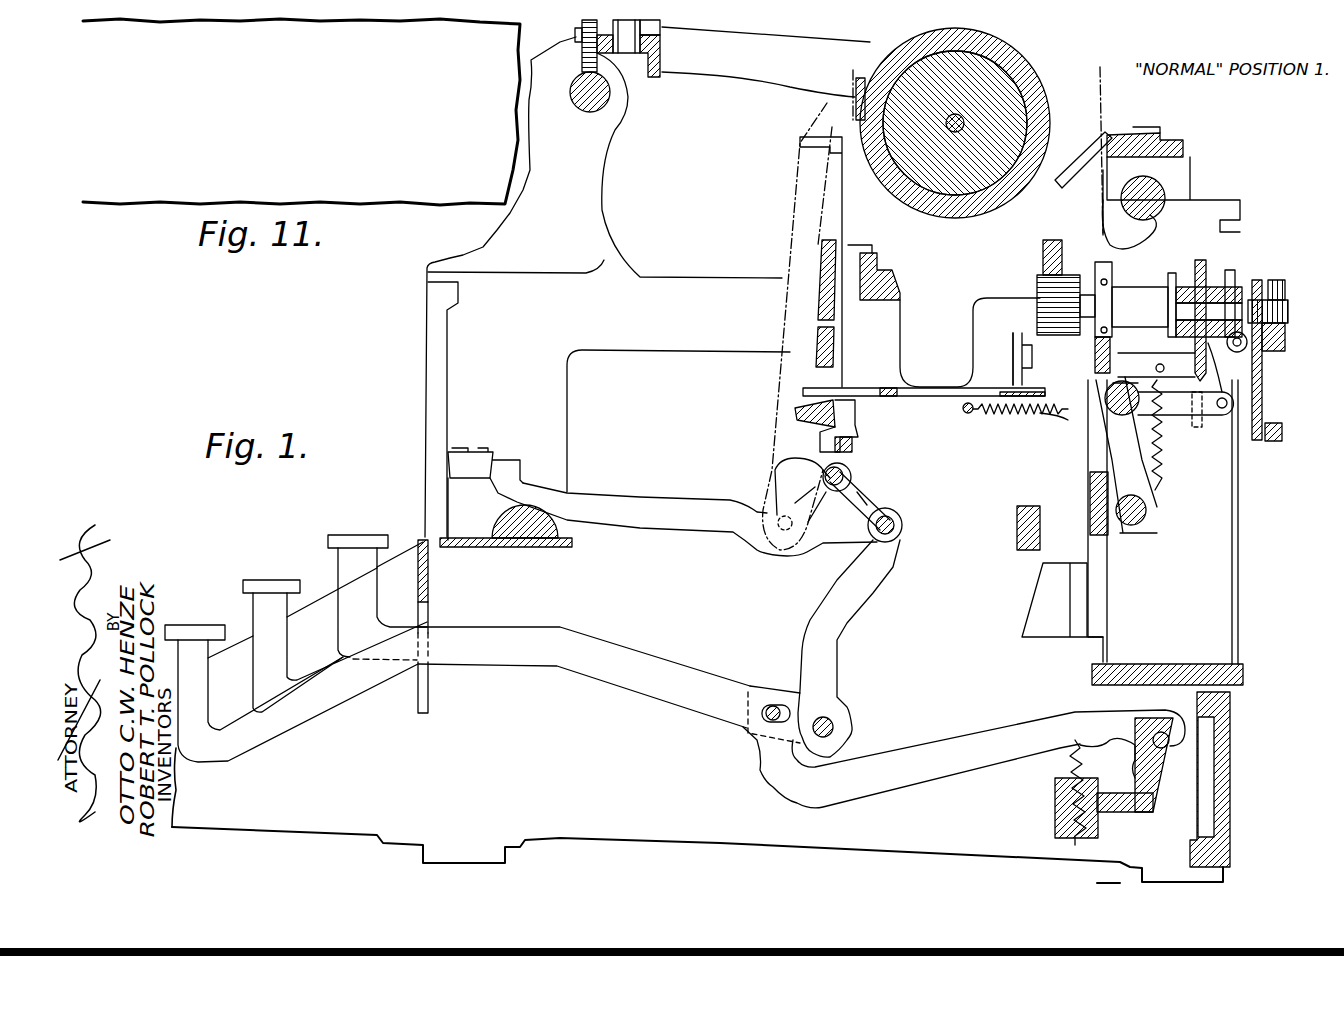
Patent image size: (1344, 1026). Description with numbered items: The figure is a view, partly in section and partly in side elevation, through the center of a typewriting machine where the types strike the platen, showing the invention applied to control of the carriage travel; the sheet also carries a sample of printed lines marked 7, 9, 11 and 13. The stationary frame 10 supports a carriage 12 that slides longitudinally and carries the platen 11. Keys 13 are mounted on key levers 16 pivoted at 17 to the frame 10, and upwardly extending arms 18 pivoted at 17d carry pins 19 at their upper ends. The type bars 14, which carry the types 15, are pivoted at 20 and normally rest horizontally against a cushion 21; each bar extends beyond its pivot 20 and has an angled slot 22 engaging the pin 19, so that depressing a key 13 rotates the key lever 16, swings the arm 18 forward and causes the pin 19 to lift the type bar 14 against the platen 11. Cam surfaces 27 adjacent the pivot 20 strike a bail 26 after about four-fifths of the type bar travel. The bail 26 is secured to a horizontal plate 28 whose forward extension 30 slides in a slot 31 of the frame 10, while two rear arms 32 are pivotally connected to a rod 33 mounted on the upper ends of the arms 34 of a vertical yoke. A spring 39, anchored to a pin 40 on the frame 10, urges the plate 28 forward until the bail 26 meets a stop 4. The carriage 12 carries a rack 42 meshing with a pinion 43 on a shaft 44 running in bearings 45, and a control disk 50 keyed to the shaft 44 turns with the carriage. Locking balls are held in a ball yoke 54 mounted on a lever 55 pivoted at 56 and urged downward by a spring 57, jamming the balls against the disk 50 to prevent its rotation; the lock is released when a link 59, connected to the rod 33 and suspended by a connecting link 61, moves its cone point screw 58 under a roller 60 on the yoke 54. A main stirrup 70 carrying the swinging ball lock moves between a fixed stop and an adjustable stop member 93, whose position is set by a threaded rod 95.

In FIG. 11, the key line 7 of sample print 7 is at (290, 59).
In FIG. 11, the key line 9 of sample print 9 is at (245, 98).
In FIG. 11, the platen 11 is at (214, 134).
In FIG. 1, the platen 11 is at (1058, 82).
In FIG. 11, the keys 13 is at (185, 171).
In FIG. 1, the keys 13 is at (190, 627).
In FIG. 1, the frame 10 is at (1305, 287).
In FIG. 1, the carriage 12 is at (752, 62).
In FIG. 1, the type bars 14 is at (790, 237).
In FIG. 1, the types 15 is at (850, 117).
In FIG. 1, the stop 4 is at (828, 375).
In FIG. 1, the plate 28 is at (893, 385).
In FIG. 1, the extension 30 is at (803, 390).
In FIG. 1, the slot 31 is at (862, 405).
In FIG. 1, the bail 26 is at (790, 443).
In FIG. 1, the cam surfaces 27 is at (773, 462).
In FIG. 1, the pivot 20 is at (848, 475).
In FIG. 1, the slot 22 is at (872, 503).
In FIG. 1, the pin 19 is at (900, 525).
In FIG. 1, the pin 40 is at (966, 413).
In FIG. 1, the spring 39 is at (1001, 418).
In FIG. 1, the arms 32 is at (1068, 422).
In FIG. 1, the cushion 21 is at (560, 542).
In FIG. 1, the key levers 16 is at (640, 668).
In FIG. 1, the pivot 17 is at (1185, 725).
In FIG. 1, the pivot 17d is at (798, 700).
In FIG. 1, the upwardly extending arms 18 is at (845, 607).
In FIG. 1, the rack 42 is at (1040, 252).
In FIG. 1, the pinion 43 is at (1040, 292).
In FIG. 1, the shaft 44 is at (1148, 293).
In FIG. 1, the bearings 45 is at (1083, 180).
In FIG. 1, the control disk 50 is at (1208, 262).
In FIG. 1, the main stirrup 70 is at (1240, 268).
In FIG. 1, the adjustable stop member 93 is at (1273, 278).
In FIG. 1, the ball yoke 54 is at (1285, 352).
In FIG. 1, the connecting link 61 is at (1235, 378).
In FIG. 1, the roller 60 is at (1236, 410).
In FIG. 1, the rod 95 is at (1283, 432).
In FIG. 1, the link 59 is at (1198, 415).
In FIG. 1, the cone point screw 58 is at (1203, 425).
In FIG. 1, the spring 57 is at (1133, 473).
In FIG. 1, the arms 34 is at (1158, 467).
In FIG. 1, the lever 55 is at (1140, 365).
In FIG. 1, the pivot 56 is at (1095, 358).
In FIG. 1, the rod 33 is at (1093, 390).